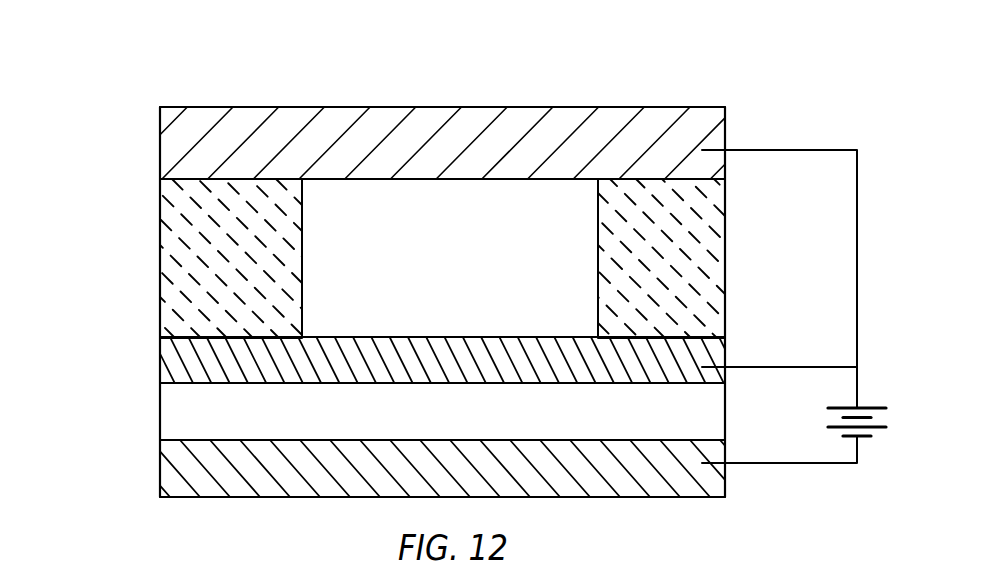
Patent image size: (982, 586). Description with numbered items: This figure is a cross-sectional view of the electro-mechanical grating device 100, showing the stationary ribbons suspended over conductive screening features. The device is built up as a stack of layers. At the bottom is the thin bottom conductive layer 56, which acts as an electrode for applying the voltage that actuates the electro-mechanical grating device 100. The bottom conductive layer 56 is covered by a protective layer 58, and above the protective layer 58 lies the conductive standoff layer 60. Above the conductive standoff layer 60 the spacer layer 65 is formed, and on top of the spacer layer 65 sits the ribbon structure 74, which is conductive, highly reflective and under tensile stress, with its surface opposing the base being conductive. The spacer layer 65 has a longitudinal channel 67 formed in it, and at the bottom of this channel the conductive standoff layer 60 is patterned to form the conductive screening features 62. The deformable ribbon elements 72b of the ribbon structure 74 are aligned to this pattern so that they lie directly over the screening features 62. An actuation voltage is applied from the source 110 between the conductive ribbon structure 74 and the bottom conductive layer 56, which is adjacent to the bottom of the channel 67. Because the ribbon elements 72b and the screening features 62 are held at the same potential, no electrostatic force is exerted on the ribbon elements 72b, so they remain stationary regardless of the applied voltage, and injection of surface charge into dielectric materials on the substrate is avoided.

The electro-mechanical grating device 100 is at (222, 83).
The ribbon structure 74 is at (148, 155).
The deformable ribbon elements 72b is at (490, 130).
The spacer layer 65 is at (167, 283).
The longitudinal channel 67 is at (389, 251).
The conductive screening features 62 is at (465, 348).
The conductive standoff layer 60 is at (168, 365).
The protective layer 58 is at (175, 413).
The bottom conductive layer 56 is at (172, 472).
The source 110 is at (850, 406).